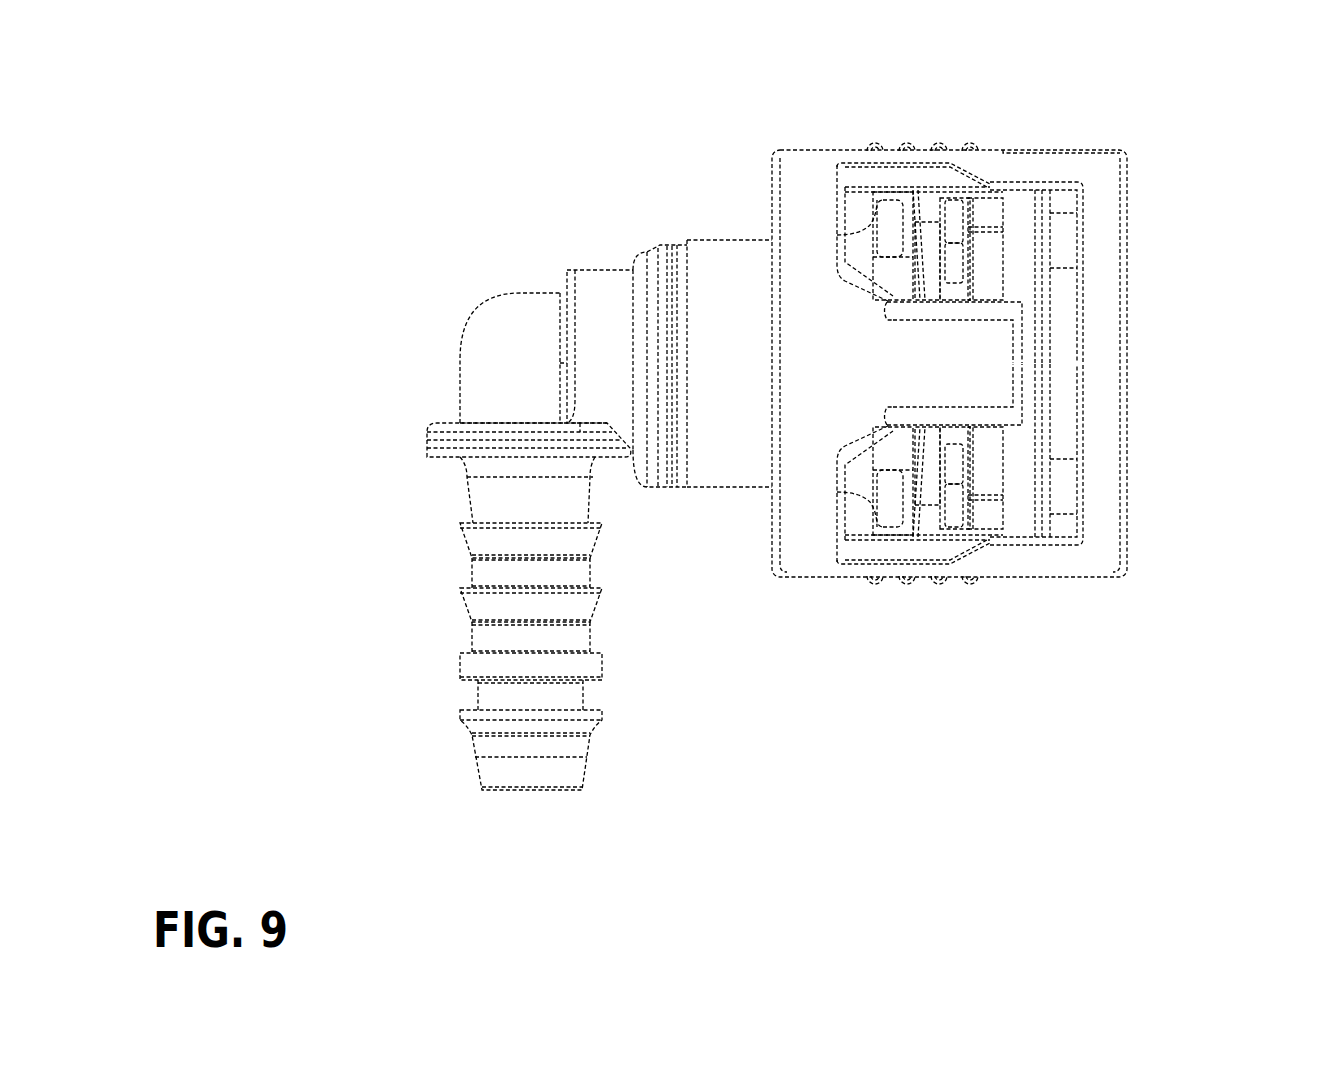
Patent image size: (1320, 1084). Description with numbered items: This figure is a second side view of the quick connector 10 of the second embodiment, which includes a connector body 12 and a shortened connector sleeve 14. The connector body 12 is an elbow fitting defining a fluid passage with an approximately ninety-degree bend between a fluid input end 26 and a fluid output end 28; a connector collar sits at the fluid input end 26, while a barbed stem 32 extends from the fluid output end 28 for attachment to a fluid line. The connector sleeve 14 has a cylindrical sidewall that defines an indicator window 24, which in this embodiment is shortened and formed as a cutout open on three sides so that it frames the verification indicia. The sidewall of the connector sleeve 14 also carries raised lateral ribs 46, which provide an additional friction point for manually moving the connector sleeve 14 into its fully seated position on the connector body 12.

The quick connector 10 is at (444, 212).
The connector body 12 is at (600, 268).
The connector sleeve 14 is at (1098, 150).
The indicator window 24 is at (858, 163).
The fluid input end 26 is at (1152, 325).
The fluid output end 28 is at (512, 793).
The barbed stem 32 is at (470, 552).
The lateral ribs 46 is at (940, 143).